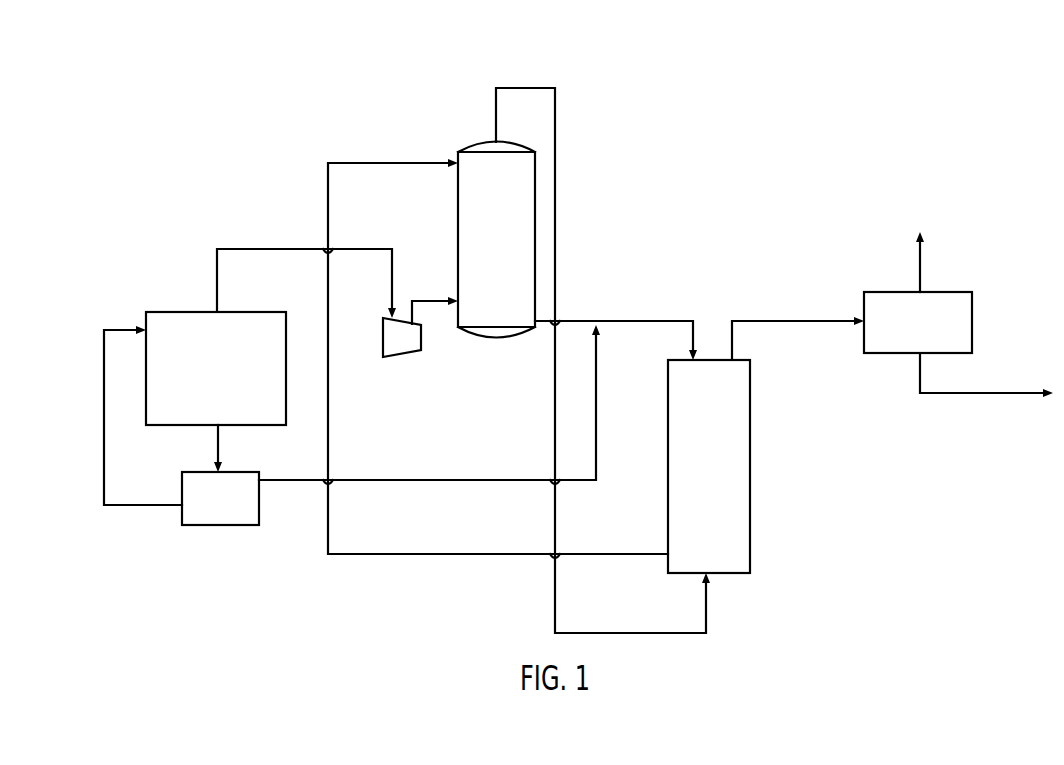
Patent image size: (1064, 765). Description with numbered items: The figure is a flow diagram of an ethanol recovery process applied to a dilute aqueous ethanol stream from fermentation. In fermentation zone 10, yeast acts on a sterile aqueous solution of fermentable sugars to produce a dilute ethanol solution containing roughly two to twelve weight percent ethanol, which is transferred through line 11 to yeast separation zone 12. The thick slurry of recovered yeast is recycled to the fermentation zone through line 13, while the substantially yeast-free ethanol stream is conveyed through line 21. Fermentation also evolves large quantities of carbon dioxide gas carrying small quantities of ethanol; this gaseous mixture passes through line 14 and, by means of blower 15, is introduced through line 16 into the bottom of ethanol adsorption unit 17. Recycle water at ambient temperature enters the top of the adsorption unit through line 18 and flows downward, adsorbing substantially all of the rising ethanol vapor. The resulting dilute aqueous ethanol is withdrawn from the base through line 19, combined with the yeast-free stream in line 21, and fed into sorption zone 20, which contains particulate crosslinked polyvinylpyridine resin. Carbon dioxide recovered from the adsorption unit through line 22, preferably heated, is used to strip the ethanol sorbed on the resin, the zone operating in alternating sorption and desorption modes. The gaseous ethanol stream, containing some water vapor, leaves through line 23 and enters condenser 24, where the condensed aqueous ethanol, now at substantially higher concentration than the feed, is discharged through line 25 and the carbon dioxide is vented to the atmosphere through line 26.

The fermentation zone 10 is at (204, 383).
The line 11 is at (218, 442).
The yeast separation zone 12 is at (208, 511).
The line 13 is at (104, 455).
The line 14 is at (264, 247).
The blower 15 is at (389, 346).
The line 16 is at (423, 300).
The ethanol adsorption unit 17 is at (484, 253).
The line 18 is at (376, 163).
The line 19 is at (632, 320).
The sorption zone 20 is at (697, 460).
The line 21 is at (430, 480).
The line 22 is at (522, 88).
The line 23 is at (812, 319).
The condenser 24 is at (906, 341).
The line 25 is at (997, 392).
The line 26 is at (922, 258).